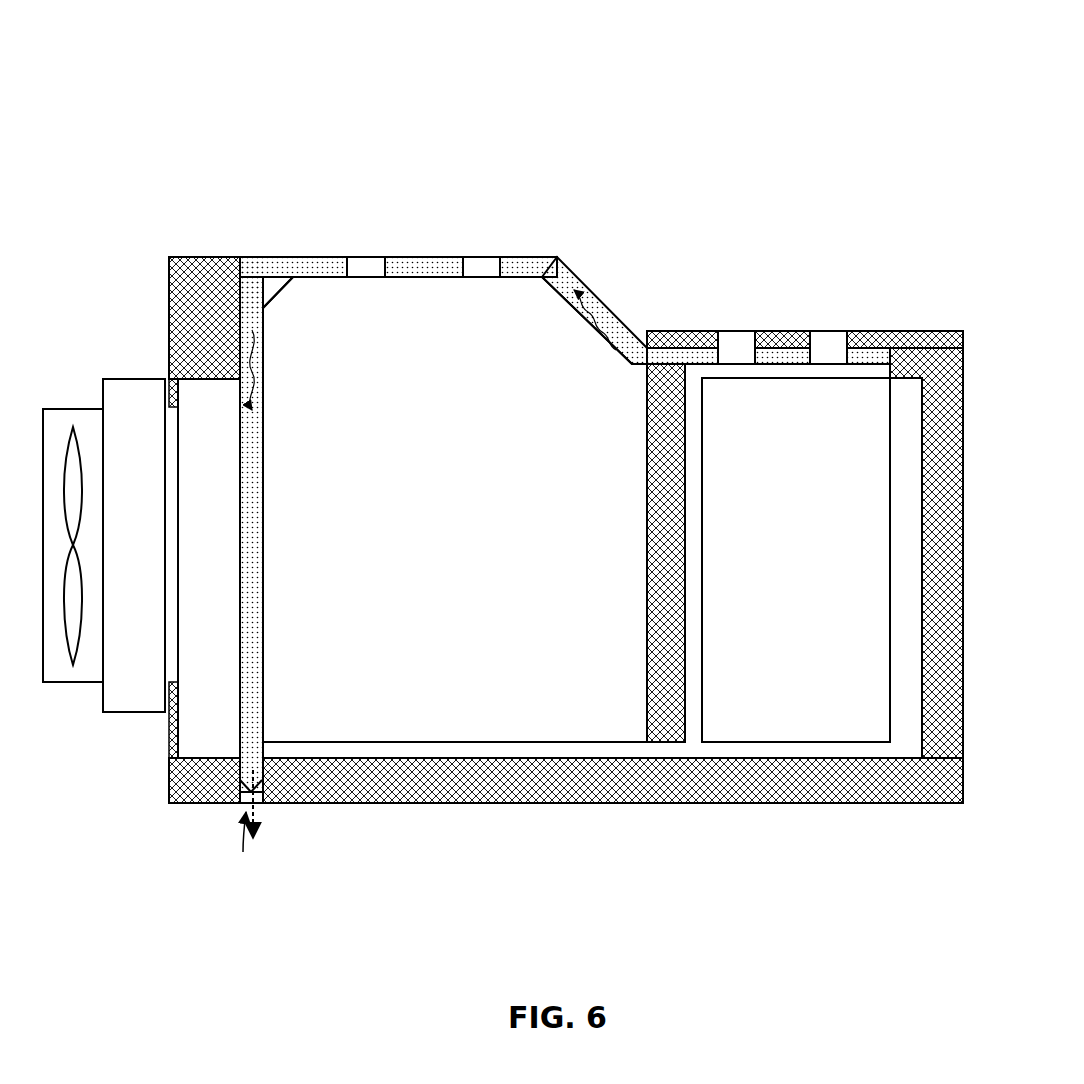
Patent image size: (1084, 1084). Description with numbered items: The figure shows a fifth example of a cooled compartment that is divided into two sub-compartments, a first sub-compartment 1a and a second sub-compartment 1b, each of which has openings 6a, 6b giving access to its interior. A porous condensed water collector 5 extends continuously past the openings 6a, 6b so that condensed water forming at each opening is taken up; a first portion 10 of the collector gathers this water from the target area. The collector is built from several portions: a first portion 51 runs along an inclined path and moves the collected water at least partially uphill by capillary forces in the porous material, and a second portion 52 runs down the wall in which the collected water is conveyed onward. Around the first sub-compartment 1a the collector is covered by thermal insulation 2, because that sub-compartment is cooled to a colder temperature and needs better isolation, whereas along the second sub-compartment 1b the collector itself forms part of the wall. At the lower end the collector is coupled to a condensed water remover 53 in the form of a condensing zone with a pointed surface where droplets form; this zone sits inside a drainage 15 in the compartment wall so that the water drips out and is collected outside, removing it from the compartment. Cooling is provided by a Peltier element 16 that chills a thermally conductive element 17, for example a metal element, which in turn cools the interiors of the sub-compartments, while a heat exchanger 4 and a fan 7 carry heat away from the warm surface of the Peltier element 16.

The thermal insulation 2 is at (218, 158).
The condensed water collector 5 is at (515, 258).
The first portion 10 is at (258, 276).
The openings 6b is at (365, 270).
The first portion 51 is at (596, 296).
The openings 6a is at (738, 356).
The second portion 52 is at (245, 590).
The condensed water remover 53 is at (262, 805).
The drainage 15 is at (243, 852).
The Peltier element 16 is at (170, 553).
The heat exchanger 4 is at (118, 650).
The fan 7 is at (72, 642).
The second sub-compartment 1b is at (482, 715).
The thermally conductive element 17 is at (575, 745).
The first sub-compartment 1a is at (823, 717).